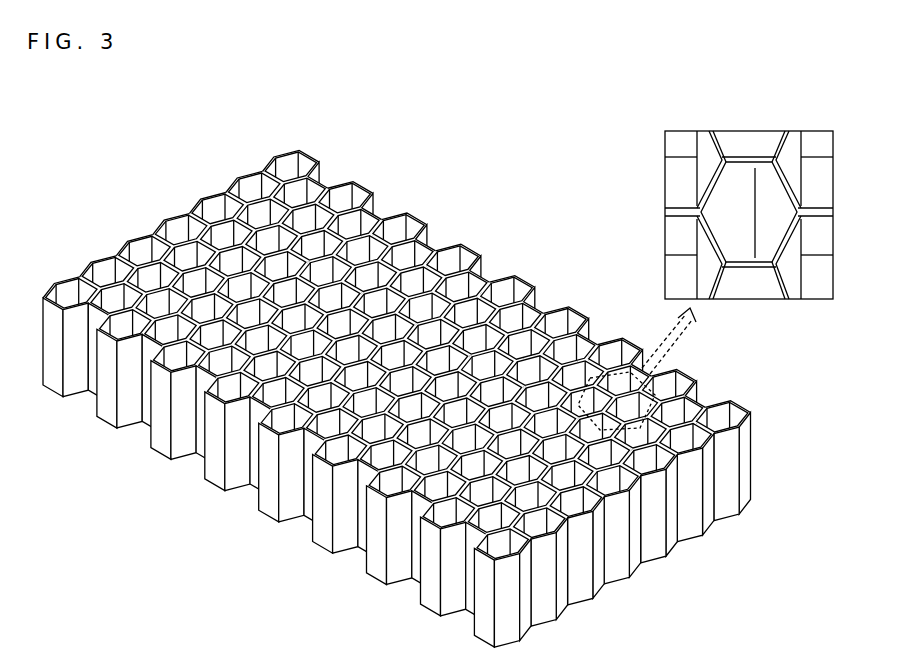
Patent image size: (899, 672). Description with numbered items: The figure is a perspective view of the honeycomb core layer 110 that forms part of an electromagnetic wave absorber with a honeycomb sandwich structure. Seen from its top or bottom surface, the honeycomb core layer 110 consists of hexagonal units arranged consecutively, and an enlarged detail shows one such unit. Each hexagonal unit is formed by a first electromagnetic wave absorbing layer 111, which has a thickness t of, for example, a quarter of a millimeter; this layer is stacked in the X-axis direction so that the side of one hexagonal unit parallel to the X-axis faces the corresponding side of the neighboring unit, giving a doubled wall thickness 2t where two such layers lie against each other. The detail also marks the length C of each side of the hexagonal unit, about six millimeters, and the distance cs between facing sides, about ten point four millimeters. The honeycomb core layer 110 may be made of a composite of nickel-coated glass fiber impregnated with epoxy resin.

The honeycomb core layer 110 is at (397, 398).
The first electromagnetic wave absorbing layer 111 is at (705, 263).
The double-thickness bonded cell wall 2t is at (744, 180).
The thickness t is at (797, 192).
The length of each side of the hexagonal unit C is at (722, 159).
The distance between facing sides of the hexagonal unit cs is at (761, 213).